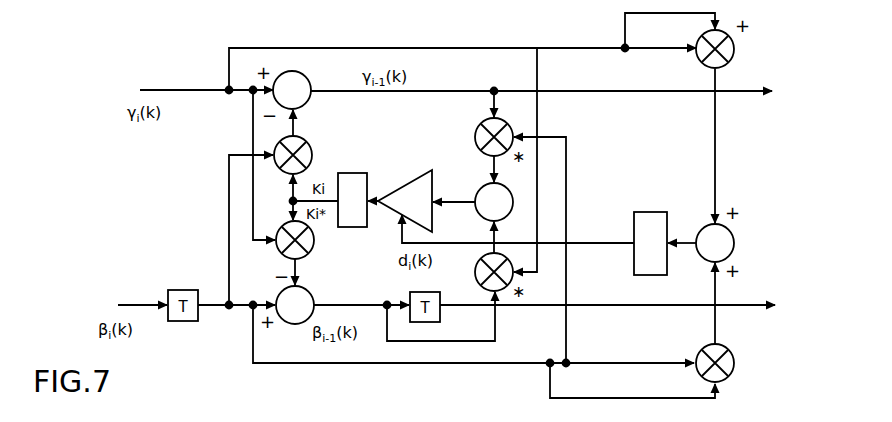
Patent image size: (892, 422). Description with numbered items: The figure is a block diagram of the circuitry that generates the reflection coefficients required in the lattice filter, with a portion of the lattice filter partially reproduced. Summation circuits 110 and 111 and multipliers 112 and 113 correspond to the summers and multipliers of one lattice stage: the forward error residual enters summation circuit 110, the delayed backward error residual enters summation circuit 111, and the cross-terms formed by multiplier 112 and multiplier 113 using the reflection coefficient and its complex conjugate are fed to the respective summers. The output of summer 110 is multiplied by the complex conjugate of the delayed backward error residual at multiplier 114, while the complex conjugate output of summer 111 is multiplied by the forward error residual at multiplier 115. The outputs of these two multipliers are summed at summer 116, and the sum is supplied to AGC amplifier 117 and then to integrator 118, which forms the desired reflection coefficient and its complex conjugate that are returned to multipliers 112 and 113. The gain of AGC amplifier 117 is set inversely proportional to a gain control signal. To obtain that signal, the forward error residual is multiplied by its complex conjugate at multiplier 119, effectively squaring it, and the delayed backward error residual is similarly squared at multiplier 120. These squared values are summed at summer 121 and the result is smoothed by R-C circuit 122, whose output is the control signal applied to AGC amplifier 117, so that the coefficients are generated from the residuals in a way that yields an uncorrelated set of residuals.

The summation circuit 110 is at (310, 79).
The summation circuit 111 is at (310, 292).
The multiplier 112 is at (306, 139).
The multiplier 113 is at (314, 246).
The multiplier 114 is at (477, 133).
The multiplier 115 is at (476, 278).
The summer 116 is at (480, 189).
The AGC amplifier 117 is at (400, 187).
The integrator 118 is at (365, 173).
The multiplier 119 is at (736, 58).
The multiplier 120 is at (734, 353).
The summer 121 is at (736, 243).
The R-C circuit 122 is at (650, 212).